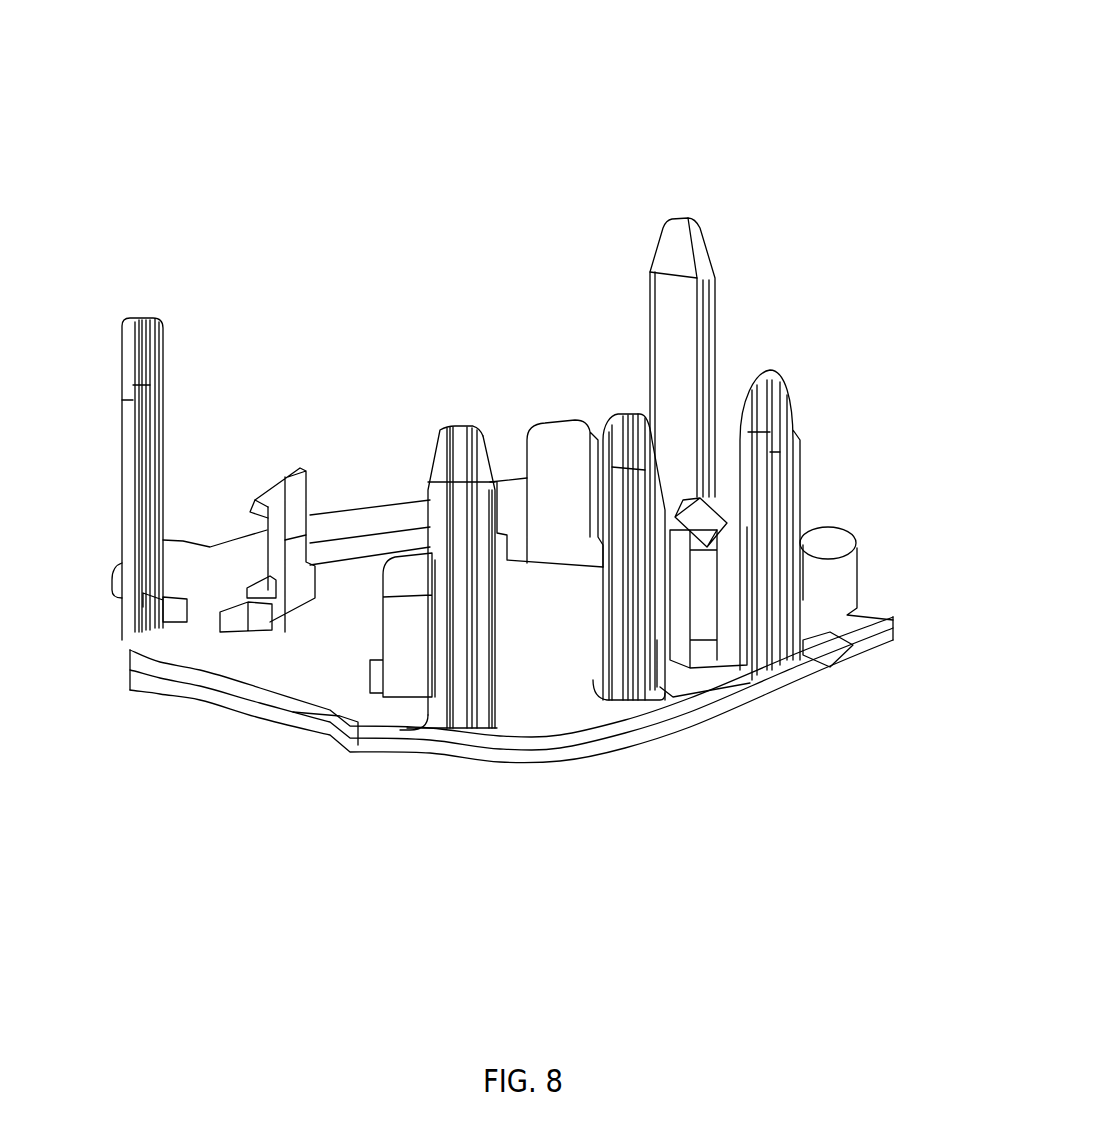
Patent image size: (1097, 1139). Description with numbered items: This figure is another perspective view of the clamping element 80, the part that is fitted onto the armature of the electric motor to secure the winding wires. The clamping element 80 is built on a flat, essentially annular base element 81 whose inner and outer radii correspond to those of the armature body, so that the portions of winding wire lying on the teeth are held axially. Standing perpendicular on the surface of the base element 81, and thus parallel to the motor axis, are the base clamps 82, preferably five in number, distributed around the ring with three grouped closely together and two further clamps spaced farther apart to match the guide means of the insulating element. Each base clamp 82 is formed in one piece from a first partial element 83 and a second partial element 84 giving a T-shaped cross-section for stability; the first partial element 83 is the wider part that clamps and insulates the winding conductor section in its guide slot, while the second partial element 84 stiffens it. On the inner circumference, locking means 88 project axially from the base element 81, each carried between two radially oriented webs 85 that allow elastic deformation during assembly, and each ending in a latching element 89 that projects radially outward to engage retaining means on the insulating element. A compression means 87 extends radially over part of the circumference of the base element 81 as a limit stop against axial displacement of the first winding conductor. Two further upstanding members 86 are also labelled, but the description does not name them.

The clamping element 80 is at (663, 76).
The base element 81 is at (306, 697).
The base clamp 82 is at (605, 311).
The first partial element 83 is at (135, 613).
The second partial element 84 is at (155, 583).
The web 85 is at (230, 620).
The tall post 86 is at (163, 281).
The compression means 87 is at (750, 705).
The locking means 88 is at (285, 547).
The latching element 89 is at (392, 562).